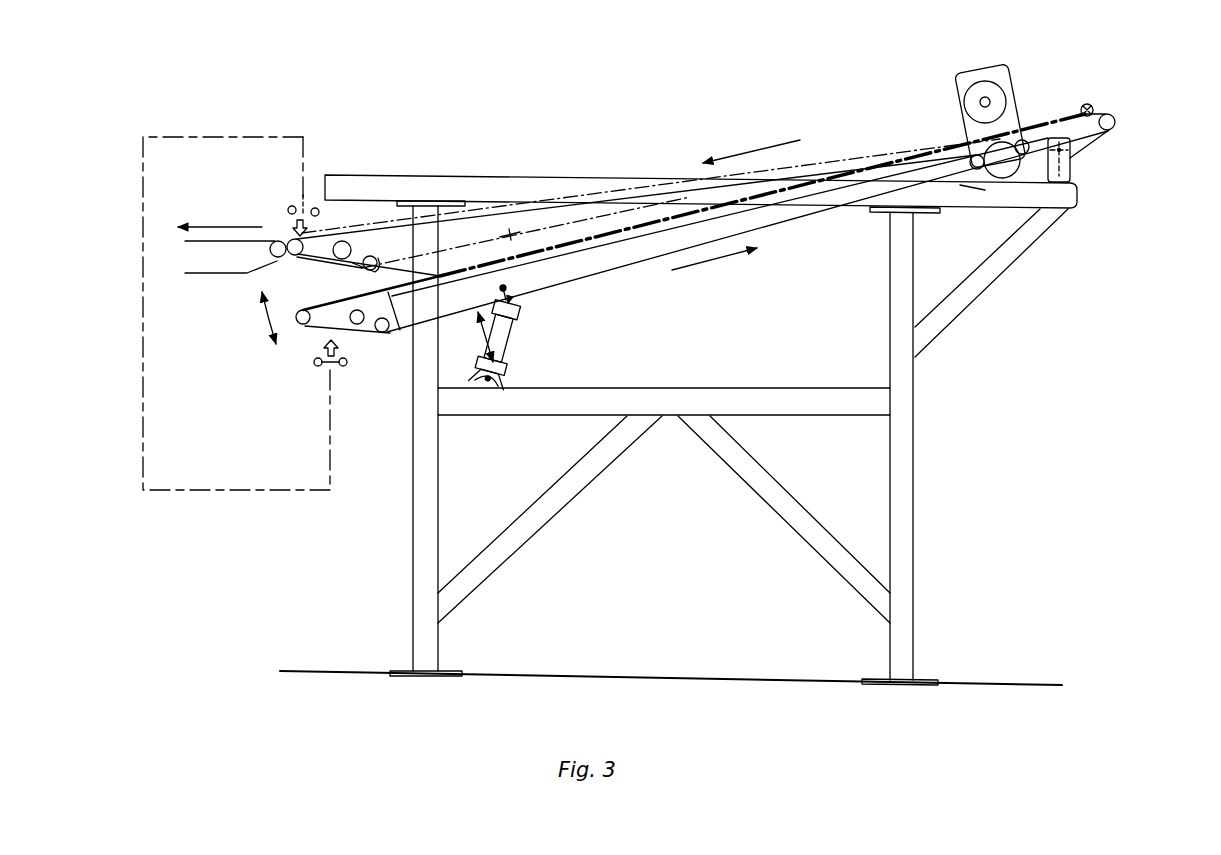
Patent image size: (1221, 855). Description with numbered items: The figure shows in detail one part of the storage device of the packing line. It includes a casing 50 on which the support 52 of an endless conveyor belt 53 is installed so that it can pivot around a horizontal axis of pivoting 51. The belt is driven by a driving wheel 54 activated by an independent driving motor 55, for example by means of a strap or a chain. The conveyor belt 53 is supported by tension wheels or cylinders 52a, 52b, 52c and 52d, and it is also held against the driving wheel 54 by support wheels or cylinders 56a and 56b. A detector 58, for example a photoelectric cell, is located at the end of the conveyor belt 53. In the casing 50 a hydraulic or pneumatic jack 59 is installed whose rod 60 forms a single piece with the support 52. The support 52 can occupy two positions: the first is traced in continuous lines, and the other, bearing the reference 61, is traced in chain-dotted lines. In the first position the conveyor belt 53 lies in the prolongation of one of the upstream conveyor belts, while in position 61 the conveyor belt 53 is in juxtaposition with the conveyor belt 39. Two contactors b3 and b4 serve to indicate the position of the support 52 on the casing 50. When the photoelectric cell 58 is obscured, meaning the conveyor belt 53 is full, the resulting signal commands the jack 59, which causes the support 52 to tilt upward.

The conveyor belt 39 is at (253, 240).
The casing 50 is at (677, 506).
The horizontal axis of pivoting 51 is at (1075, 150).
The support 52 is at (788, 215).
The tension wheel 52a is at (300, 318).
The tension wheel 52b is at (340, 330).
The tension wheel 52c is at (383, 333).
The tension wheel 52d is at (1114, 118).
The endless conveyor belt 53 is at (623, 232).
The driving wheel 54 is at (1078, 200).
The driving motor 55 is at (980, 100).
The support wheel 56a is at (1025, 140).
The support wheel 56b is at (972, 152).
The detector 58 is at (1091, 106).
The jack 59 is at (531, 343).
The rod 60 is at (513, 298).
The second position 61 is at (538, 225).
The contactor b3 is at (340, 372).
The contactor b4 is at (298, 195).